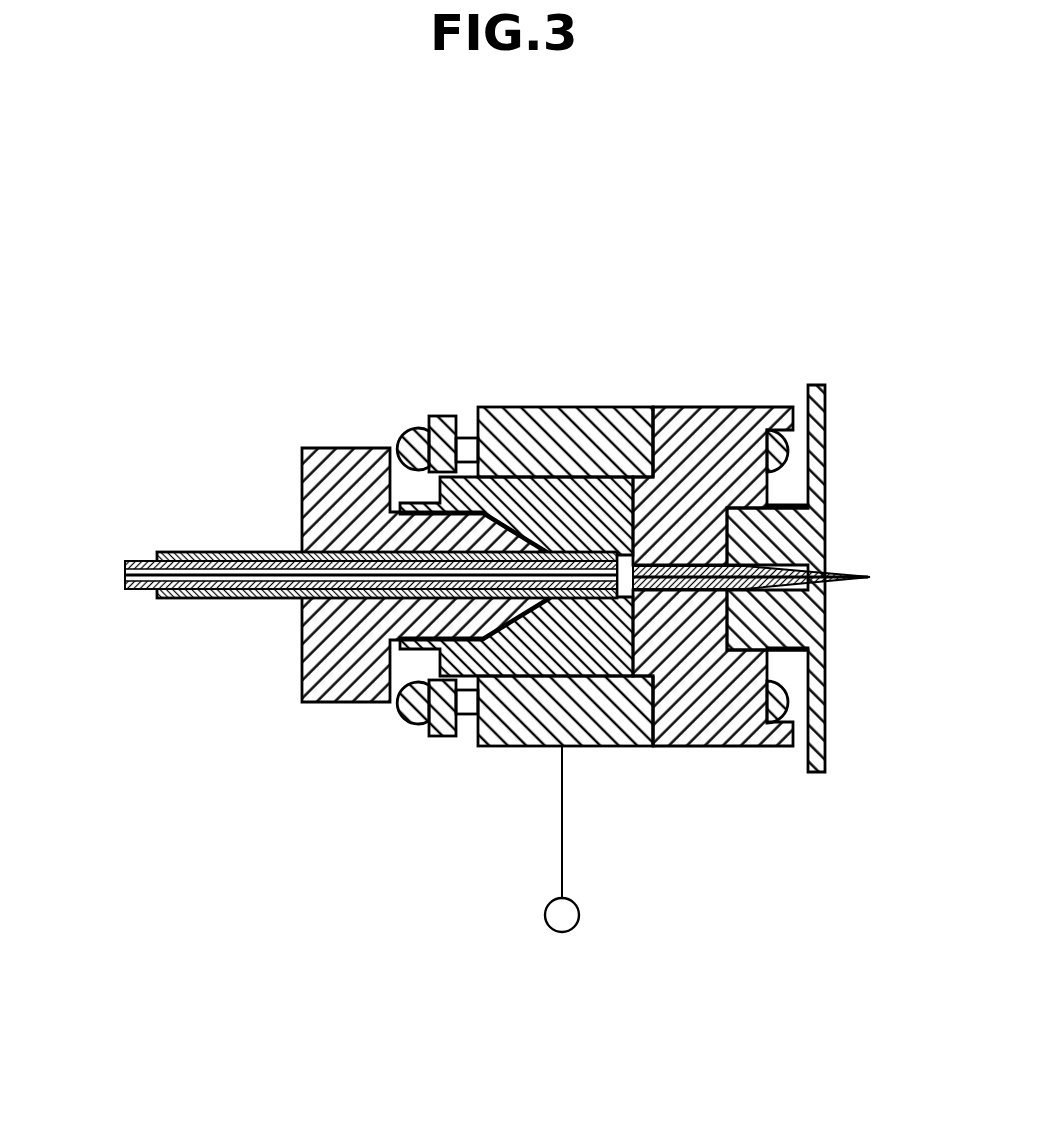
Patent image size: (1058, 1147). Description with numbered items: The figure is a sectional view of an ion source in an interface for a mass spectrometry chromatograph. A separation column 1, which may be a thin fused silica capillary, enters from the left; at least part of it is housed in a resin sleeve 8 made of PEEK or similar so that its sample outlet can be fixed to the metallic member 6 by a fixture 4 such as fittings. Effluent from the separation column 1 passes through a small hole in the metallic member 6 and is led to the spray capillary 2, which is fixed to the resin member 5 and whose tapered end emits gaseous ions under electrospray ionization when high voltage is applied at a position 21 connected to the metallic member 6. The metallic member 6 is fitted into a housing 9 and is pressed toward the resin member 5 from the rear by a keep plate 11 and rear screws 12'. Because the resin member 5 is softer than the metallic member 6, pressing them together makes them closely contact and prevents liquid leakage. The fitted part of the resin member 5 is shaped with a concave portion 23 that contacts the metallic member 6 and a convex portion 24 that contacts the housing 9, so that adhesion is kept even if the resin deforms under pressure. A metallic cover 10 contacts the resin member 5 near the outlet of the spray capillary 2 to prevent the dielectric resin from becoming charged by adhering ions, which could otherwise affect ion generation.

The separation column 1 is at (140, 553).
The spray capillary 2 is at (846, 592).
The fixture 4 is at (335, 448).
The resin member 5 is at (748, 463).
The metallic member 6 is at (510, 655).
The resin sleeve 8 is at (192, 598).
The housing 9 is at (565, 407).
The metallic cover 10 is at (827, 460).
The keep plate 11 is at (445, 416).
The rear screws 12' is at (534, 685).
The position for applying high voltage 21 is at (562, 932).
The concave portion 23 is at (655, 513).
The convex portion 24 is at (664, 415).